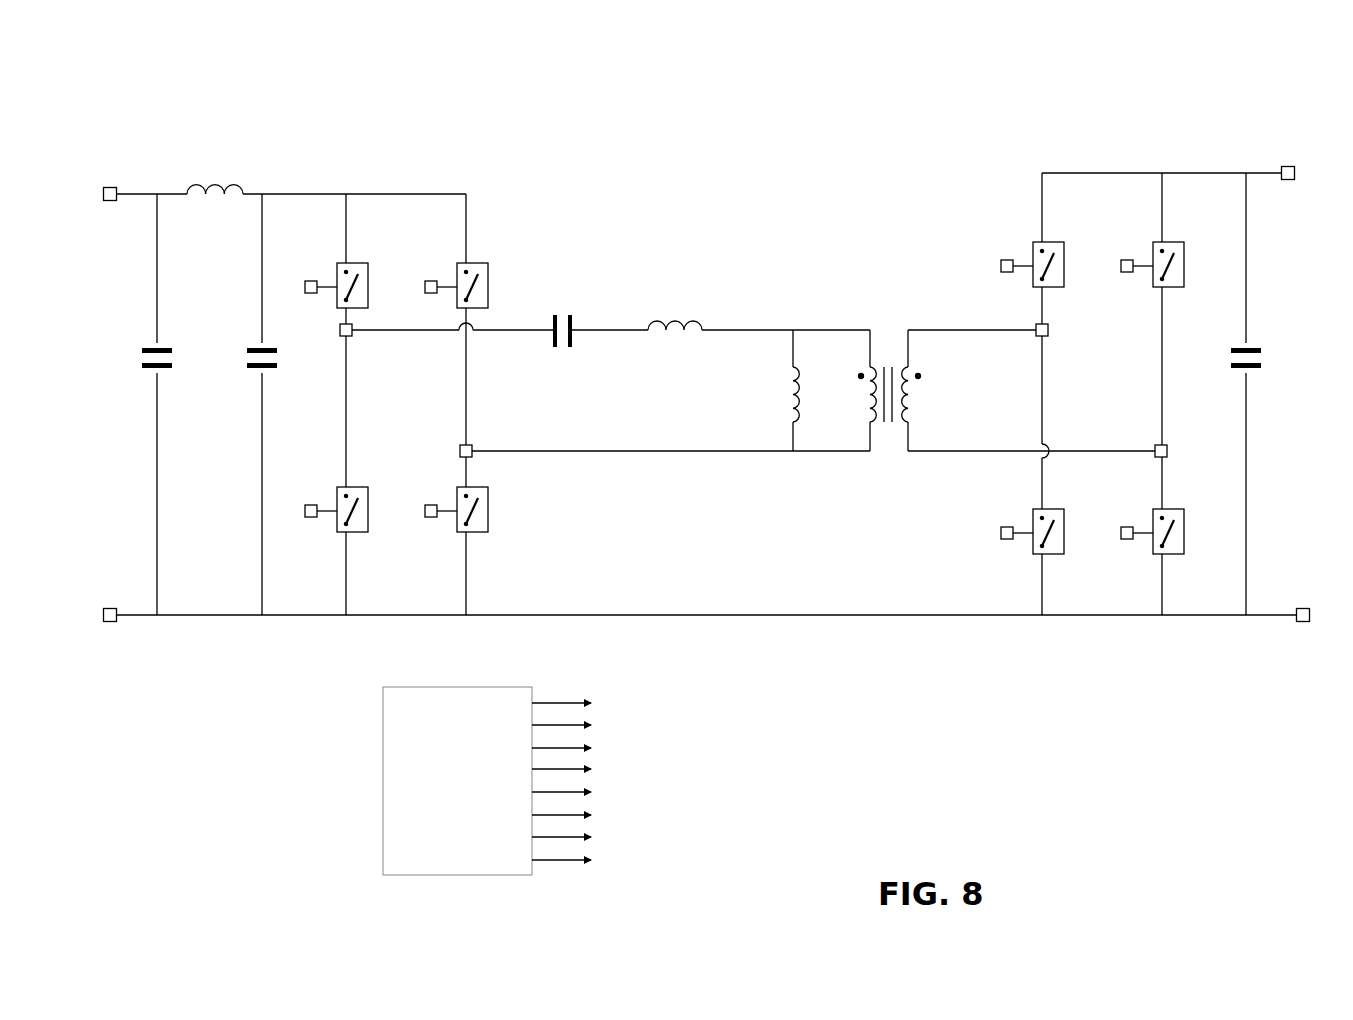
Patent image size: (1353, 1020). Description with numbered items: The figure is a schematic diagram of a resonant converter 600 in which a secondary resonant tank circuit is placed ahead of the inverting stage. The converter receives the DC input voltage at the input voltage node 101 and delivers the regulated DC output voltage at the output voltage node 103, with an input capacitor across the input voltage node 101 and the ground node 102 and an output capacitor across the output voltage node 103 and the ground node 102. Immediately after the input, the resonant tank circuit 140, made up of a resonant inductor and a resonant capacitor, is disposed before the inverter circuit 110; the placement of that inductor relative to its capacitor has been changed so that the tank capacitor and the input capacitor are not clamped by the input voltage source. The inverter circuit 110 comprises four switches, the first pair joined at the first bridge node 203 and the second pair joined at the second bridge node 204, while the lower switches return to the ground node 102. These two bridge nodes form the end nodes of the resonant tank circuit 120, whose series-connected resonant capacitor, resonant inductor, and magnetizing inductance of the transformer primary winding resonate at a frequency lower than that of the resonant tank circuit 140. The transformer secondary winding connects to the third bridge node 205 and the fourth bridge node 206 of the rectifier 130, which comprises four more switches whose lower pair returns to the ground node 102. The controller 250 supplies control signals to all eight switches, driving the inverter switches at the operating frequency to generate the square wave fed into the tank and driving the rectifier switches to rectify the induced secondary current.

The resonant converter 600 is at (562, 90).
The resonant tank circuit 140 is at (263, 128).
The inverter circuit 110 is at (503, 218).
The resonant tank circuit 120 is at (650, 268).
The rectifier 130 is at (964, 244).
The input voltage node 101 is at (112, 201).
The ground node 102 is at (112, 622).
The output voltage node 103 is at (1290, 180).
The first bridge node 203 is at (340, 330).
The second bridge node 204 is at (459, 449).
The third bridge node 205 is at (1049, 331).
The fourth bridge node 206 is at (1168, 451).
The controller 250 is at (502, 781).